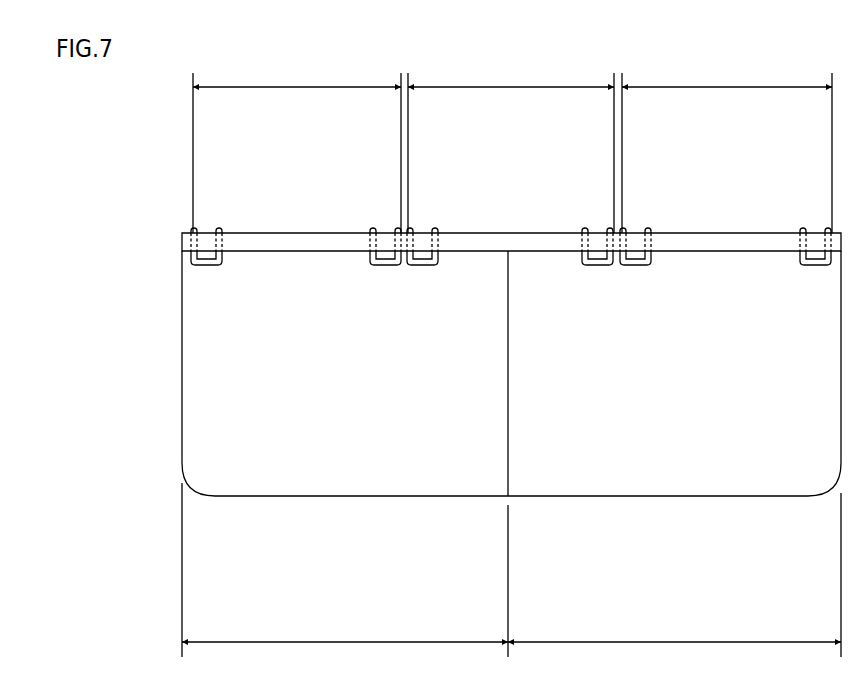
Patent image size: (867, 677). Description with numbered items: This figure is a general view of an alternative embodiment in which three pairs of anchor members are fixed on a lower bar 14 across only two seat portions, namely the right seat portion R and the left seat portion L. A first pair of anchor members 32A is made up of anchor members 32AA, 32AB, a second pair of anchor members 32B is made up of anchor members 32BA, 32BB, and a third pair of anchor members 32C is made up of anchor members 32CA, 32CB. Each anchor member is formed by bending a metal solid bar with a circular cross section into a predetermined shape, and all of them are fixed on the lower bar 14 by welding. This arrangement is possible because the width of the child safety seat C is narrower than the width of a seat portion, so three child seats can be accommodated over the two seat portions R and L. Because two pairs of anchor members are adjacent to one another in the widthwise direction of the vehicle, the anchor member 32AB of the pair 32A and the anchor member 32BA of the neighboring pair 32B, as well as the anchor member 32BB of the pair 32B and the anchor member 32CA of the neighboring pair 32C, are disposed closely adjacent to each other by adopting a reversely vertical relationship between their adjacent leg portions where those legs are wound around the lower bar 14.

The lower bar 14 is at (736, 244).
The anchor member 32AA is at (223, 263).
The anchor member 32AB is at (369, 263).
The anchor member 32BA is at (439, 263).
The anchor member 32BB is at (581, 263).
The anchor member 32CA is at (652, 263).
The anchor member 32CB is at (799, 263).
The pair of anchor members 32A is at (306, 288).
The pair of anchor members 32B is at (480, 315).
The pair of anchor members 32C is at (724, 305).
The child safety seat C is at (207, 390).
The right seat portion R is at (355, 458).
The left seat portion L is at (668, 458).